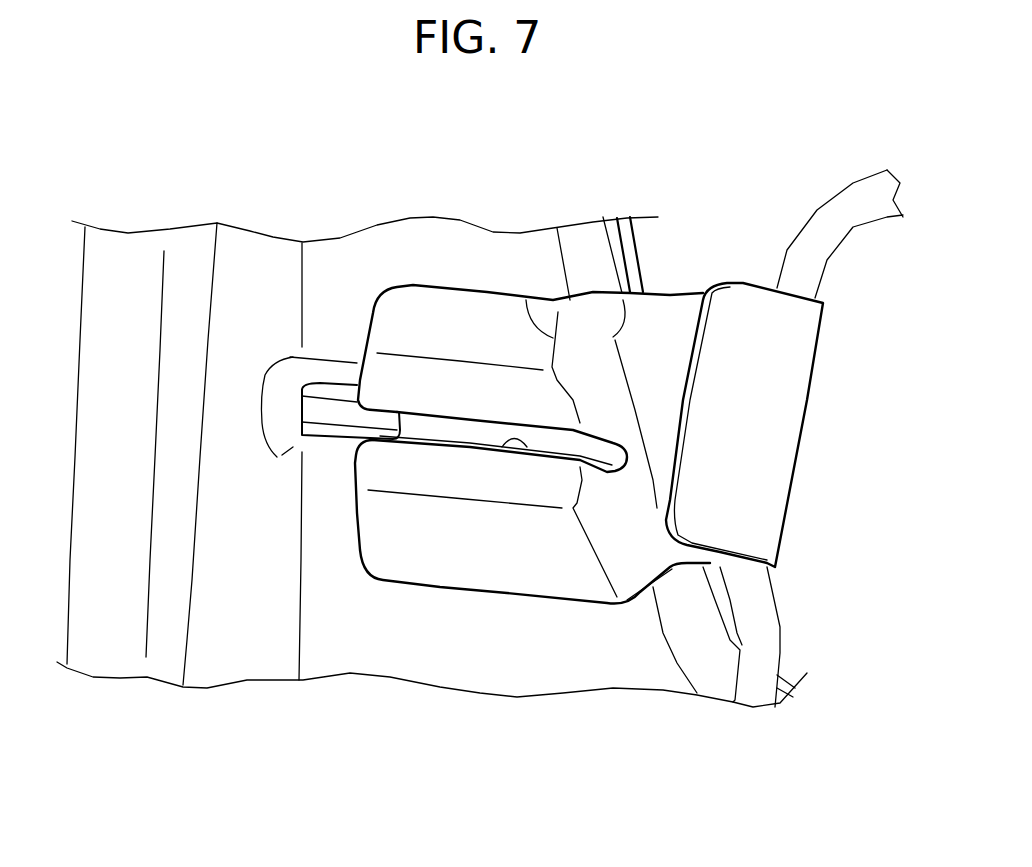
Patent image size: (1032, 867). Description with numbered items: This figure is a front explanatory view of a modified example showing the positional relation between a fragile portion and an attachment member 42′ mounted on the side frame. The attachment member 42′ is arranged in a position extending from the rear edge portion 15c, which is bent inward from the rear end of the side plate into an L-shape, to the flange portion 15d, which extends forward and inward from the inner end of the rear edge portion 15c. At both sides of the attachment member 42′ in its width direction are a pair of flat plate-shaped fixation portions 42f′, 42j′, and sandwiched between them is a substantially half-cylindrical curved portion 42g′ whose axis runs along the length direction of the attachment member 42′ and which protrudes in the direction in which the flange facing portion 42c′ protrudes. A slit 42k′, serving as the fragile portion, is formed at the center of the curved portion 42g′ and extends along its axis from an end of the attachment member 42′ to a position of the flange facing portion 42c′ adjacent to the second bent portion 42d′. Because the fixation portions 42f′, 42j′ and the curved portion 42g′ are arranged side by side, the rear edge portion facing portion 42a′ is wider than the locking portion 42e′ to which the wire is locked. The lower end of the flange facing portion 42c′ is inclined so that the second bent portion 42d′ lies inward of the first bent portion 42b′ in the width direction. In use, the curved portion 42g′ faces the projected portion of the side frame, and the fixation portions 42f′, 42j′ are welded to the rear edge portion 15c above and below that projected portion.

The attachment member 42′ is at (602, 362).
The rear edge portion facing portion 42a′ is at (410, 260).
The first bent portion 42b′ is at (560, 241).
The flange facing portion 42c′ is at (591, 218).
The second bent portion 42d′ is at (624, 330).
The locking portion 42e′ is at (777, 425).
The fixation portion 42f′ is at (412, 219).
The curved portion 42g′ is at (526, 596).
The fixation portion 42j′ is at (465, 637).
The slit 42k′ is at (508, 600).
The rear edge portion 15c is at (432, 505).
The flange portion 15d is at (724, 690).